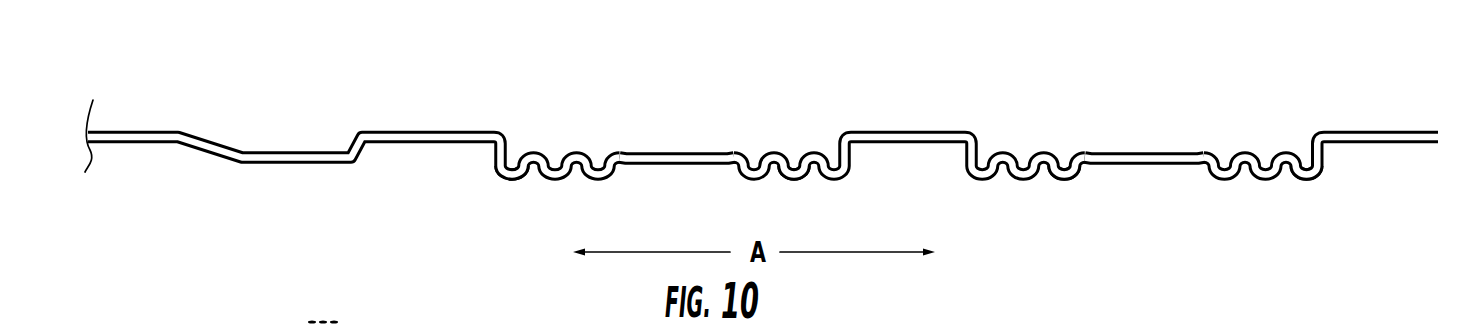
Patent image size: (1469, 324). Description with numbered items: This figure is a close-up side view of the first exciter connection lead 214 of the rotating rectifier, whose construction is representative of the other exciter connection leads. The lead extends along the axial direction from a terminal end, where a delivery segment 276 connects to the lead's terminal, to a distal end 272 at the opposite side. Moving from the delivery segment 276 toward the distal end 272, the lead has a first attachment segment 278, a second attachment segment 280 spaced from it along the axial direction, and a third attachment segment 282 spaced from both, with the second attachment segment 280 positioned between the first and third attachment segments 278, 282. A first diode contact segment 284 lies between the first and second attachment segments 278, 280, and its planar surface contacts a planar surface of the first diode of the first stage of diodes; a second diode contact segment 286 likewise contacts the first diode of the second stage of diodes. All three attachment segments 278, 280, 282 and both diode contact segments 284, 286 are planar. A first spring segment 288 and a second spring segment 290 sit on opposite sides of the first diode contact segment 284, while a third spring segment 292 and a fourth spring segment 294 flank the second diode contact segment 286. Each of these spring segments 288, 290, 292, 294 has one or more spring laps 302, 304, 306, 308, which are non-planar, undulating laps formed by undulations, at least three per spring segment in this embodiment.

The first exciter connection lead 214 is at (765, 135).
The distal end 272 is at (767, 135).
The delivery segment 276 is at (163, 131).
The first attachment segment 278 is at (432, 131).
The second attachment segment 280 is at (924, 131).
The third attachment segment 282 is at (1422, 110).
The first diode contact segment 284 is at (672, 153).
The second diode contact segment 286 is at (1151, 153).
The first spring segment 288 is at (512, 181).
The second spring segment 290 is at (799, 181).
The third spring segment 292 is at (1067, 181).
The fourth spring segment 294 is at (1309, 181).
The spring laps 302 is at (546, 149).
The spring laps 304 is at (789, 150).
The spring laps 306 is at (1023, 150).
The spring laps 308 is at (1262, 150).